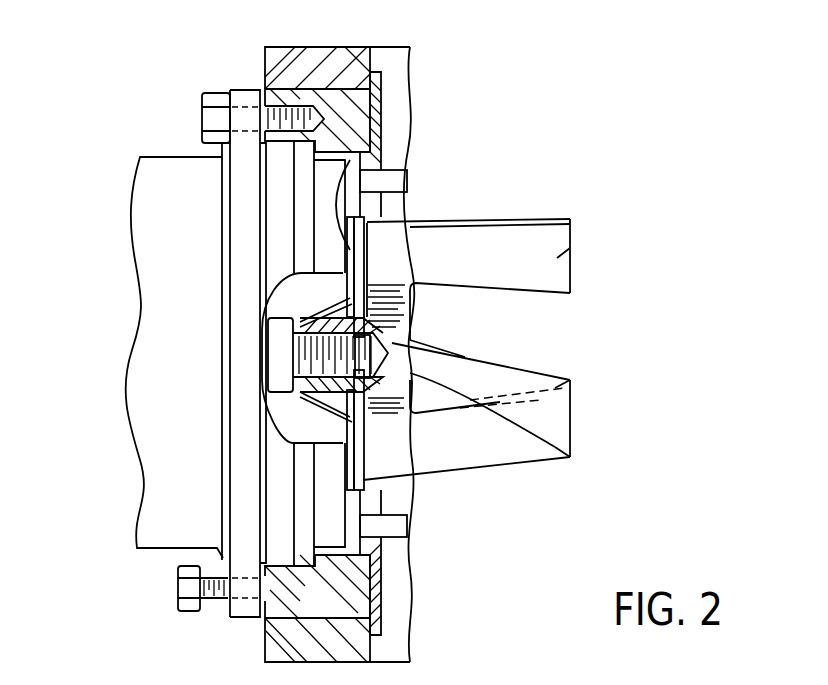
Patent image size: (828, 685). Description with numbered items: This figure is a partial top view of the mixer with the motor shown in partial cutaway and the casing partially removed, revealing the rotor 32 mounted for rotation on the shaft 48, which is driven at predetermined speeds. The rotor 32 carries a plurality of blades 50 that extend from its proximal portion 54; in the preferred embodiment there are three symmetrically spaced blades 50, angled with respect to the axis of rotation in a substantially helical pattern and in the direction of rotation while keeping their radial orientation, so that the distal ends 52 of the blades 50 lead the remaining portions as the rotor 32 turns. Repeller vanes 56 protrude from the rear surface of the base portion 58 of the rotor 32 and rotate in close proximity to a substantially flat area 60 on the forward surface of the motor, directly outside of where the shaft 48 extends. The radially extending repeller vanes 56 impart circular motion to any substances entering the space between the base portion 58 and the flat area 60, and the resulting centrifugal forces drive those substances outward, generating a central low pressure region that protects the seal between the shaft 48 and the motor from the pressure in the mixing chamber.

The rotor 32 is at (393, 447).
The shaft 48 is at (365, 323).
The blades 50 is at (495, 267).
The distal ends 52 is at (570, 250).
The proximal portion 54 is at (373, 240).
The repeller vanes 56 is at (372, 150).
The base portion 58 is at (405, 495).
The flat area 60 is at (370, 493).